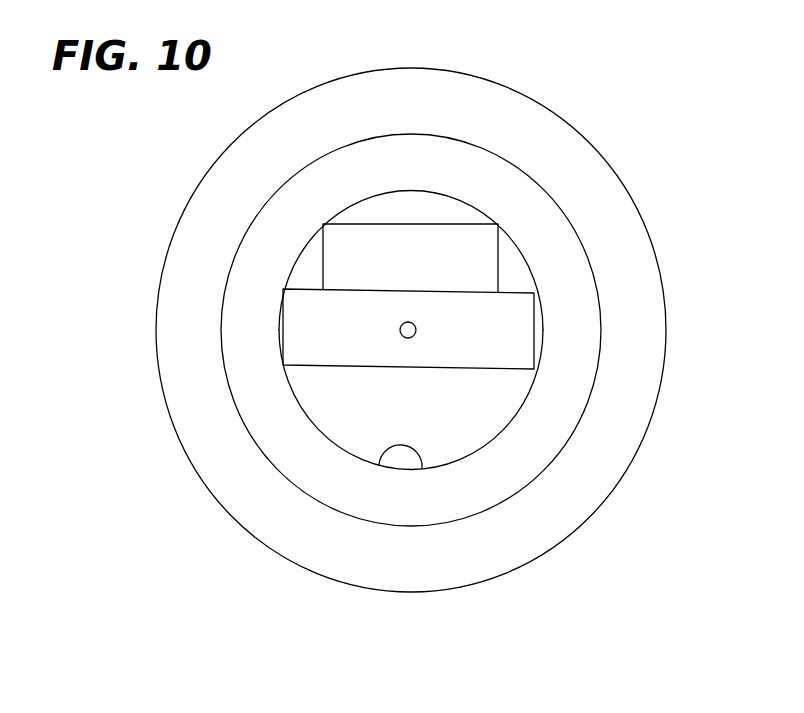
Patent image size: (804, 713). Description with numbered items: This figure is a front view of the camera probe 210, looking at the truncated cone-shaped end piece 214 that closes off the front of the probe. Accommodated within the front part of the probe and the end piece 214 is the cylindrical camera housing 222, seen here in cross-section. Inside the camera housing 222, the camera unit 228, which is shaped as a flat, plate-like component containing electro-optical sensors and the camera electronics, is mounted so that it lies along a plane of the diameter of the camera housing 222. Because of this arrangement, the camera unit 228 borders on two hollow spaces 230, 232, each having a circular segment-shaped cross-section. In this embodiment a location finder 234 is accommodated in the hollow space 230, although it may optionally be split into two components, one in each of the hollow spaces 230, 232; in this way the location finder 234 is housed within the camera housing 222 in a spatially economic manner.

The camera probe 210 is at (618, 108).
The end piece 214 is at (650, 227).
The camera housing 222 is at (398, 452).
The camera unit 228 is at (485, 370).
The hollow space 230 is at (410, 203).
The hollow space 232 is at (362, 413).
The location finder 234 is at (333, 260).